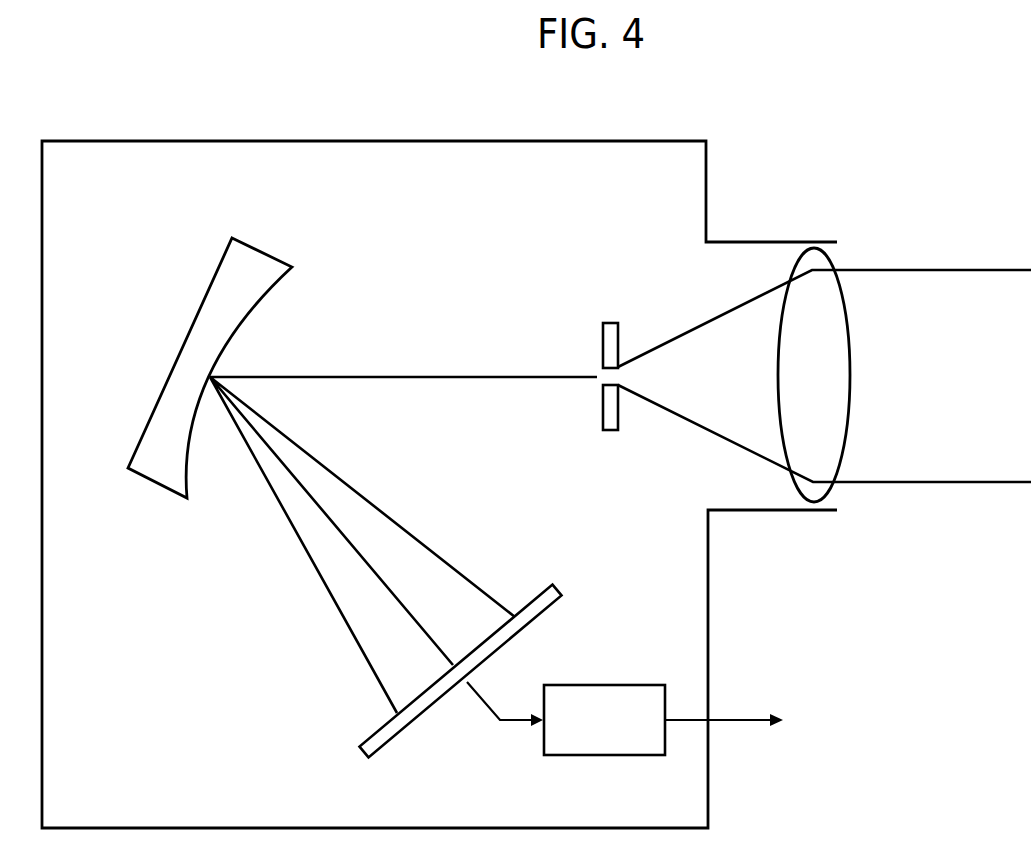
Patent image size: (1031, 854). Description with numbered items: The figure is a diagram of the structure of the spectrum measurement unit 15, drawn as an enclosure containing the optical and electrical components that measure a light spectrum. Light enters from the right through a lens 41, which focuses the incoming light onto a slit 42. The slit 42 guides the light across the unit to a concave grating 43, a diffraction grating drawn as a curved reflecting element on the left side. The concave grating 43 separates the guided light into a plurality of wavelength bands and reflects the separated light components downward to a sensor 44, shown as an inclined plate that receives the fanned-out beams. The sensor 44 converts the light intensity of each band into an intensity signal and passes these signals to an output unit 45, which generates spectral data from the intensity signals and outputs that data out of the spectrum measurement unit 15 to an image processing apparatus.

The spectrum measurement unit 15 is at (622, 141).
The lens 41 is at (850, 373).
The slit 42 is at (610, 322).
The concave grating 43 is at (258, 248).
The sensor 44 is at (558, 589).
The output unit 45 is at (602, 756).